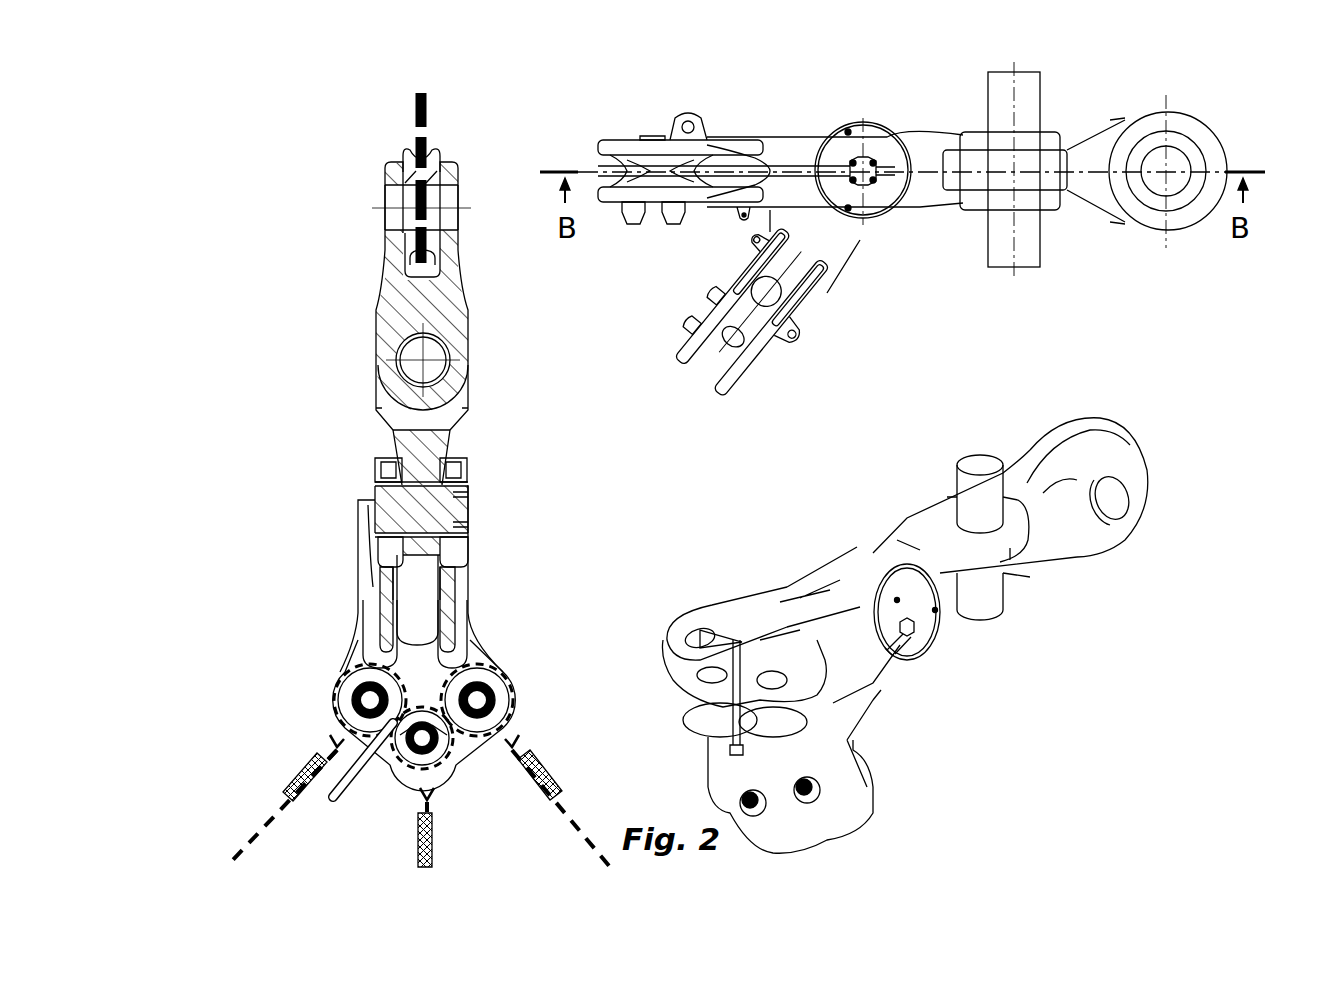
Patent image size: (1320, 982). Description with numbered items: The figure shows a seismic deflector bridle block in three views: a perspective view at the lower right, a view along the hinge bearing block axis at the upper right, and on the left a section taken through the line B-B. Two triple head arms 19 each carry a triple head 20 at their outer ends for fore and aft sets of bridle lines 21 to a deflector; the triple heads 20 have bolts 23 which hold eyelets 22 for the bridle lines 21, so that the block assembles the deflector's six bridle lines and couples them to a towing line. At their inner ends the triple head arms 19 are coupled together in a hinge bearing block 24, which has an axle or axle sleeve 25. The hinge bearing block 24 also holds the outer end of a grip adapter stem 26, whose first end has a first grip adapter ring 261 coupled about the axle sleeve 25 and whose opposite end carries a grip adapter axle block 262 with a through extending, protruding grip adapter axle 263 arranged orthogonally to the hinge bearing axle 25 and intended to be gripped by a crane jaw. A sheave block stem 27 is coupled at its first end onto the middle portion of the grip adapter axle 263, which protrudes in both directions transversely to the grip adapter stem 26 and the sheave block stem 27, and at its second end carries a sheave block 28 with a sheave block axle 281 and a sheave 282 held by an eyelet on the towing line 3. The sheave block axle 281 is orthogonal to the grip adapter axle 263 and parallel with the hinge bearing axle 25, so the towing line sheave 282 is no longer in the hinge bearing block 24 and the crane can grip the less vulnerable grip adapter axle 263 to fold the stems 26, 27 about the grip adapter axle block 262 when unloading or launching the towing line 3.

The towing line 3 is at (400, 110).
The triple head arm 19 is at (390, 587).
The triple head 20 is at (503, 650).
The bridle line 21 is at (267, 800).
The eyelet 22 is at (236, 770).
The bolt 23 is at (483, 700).
The hinge bearing block 24 is at (512, 552).
The axle sleeve 25 is at (443, 512).
The grip adapter stem 26 is at (473, 425).
The first grip adapter ring 261 is at (377, 482).
The grip adapter axle block 262 is at (475, 373).
The grip adapter axle 263 is at (430, 360).
The sheave block stem 27 is at (352, 300).
The sheave block 28 is at (365, 182).
The sheave block axle 281 is at (375, 208).
The sheave 282 is at (400, 160).